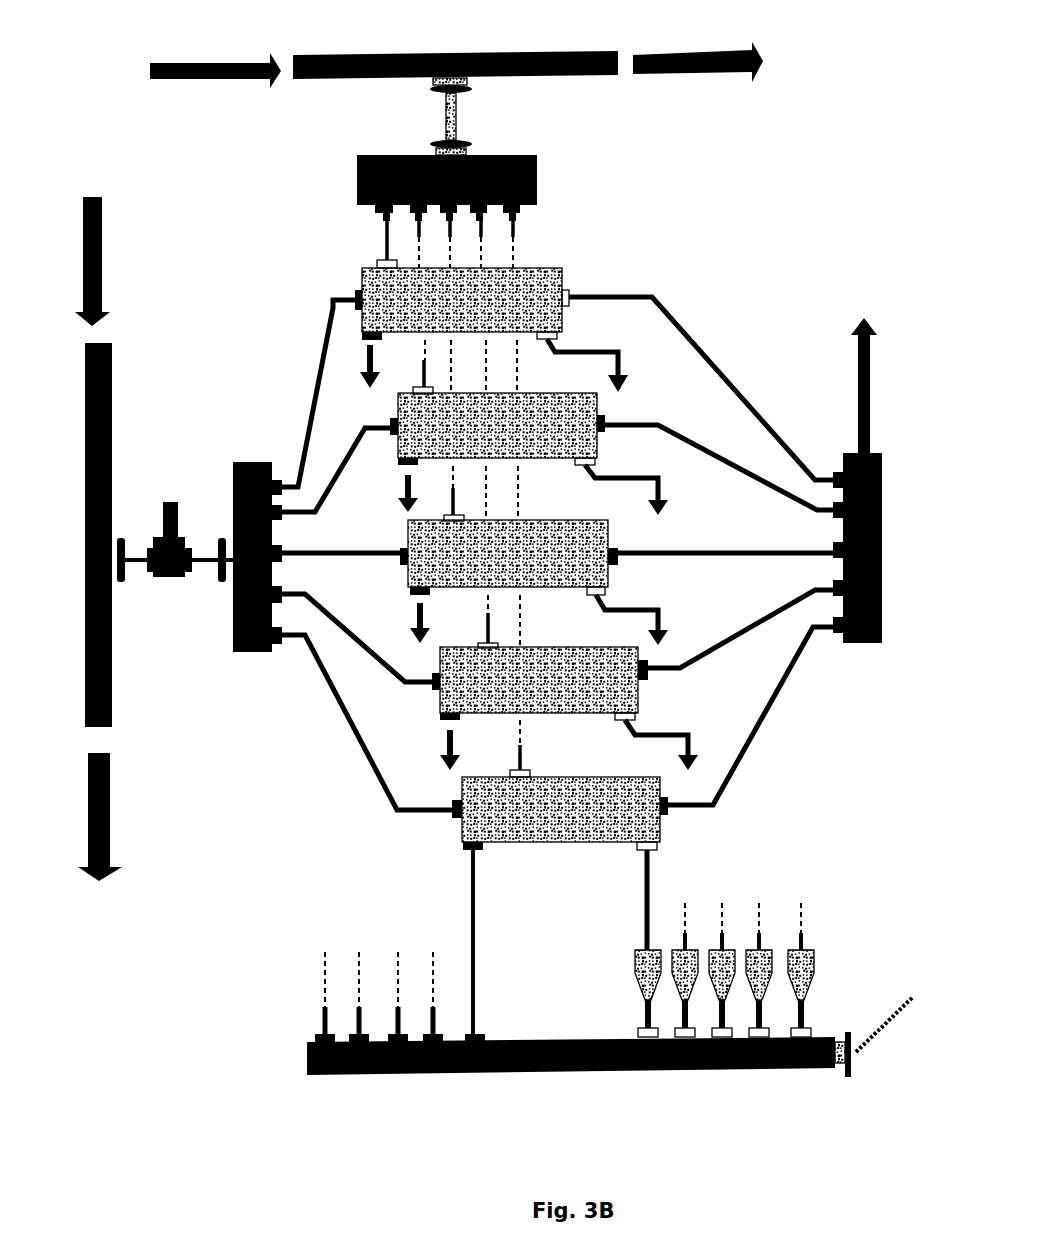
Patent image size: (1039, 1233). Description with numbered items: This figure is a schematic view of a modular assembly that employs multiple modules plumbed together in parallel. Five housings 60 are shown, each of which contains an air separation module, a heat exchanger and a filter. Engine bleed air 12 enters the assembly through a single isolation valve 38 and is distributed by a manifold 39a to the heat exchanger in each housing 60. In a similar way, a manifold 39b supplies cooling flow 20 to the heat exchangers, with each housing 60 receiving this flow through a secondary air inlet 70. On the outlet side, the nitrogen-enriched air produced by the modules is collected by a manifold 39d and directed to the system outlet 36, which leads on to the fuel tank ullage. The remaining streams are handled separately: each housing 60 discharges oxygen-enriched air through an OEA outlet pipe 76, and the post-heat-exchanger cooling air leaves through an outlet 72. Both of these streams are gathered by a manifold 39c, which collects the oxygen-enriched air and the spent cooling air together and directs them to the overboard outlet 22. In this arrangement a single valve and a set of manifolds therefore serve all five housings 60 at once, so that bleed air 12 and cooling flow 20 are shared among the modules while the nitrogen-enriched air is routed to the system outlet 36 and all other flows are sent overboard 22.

The cooling flow 20 is at (343, 50).
The manifold 39b is at (540, 177).
The secondary air inlet 70 is at (383, 237).
The housings 60 is at (565, 266).
The system outlet 36 is at (632, 287).
The OEA outlet pipe 76 is at (590, 352).
The outlet 72 is at (351, 380).
The engine bleed air 12 is at (114, 425).
The isolation valve 38 is at (166, 502).
The manifold 39a is at (238, 652).
The manifold 39d is at (872, 645).
The manifold 39c is at (314, 1060).
The overboard outlet 22 is at (878, 1045).